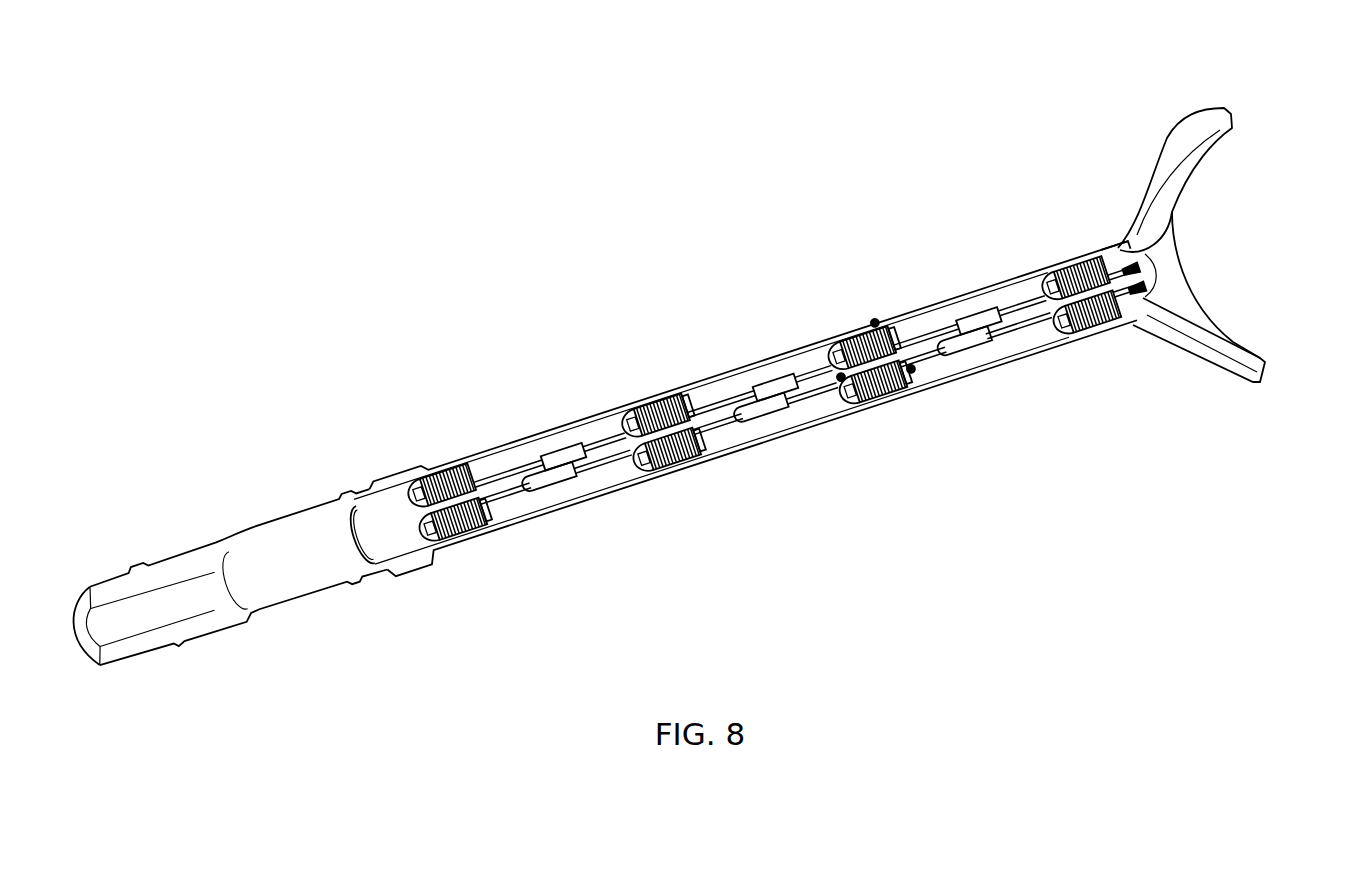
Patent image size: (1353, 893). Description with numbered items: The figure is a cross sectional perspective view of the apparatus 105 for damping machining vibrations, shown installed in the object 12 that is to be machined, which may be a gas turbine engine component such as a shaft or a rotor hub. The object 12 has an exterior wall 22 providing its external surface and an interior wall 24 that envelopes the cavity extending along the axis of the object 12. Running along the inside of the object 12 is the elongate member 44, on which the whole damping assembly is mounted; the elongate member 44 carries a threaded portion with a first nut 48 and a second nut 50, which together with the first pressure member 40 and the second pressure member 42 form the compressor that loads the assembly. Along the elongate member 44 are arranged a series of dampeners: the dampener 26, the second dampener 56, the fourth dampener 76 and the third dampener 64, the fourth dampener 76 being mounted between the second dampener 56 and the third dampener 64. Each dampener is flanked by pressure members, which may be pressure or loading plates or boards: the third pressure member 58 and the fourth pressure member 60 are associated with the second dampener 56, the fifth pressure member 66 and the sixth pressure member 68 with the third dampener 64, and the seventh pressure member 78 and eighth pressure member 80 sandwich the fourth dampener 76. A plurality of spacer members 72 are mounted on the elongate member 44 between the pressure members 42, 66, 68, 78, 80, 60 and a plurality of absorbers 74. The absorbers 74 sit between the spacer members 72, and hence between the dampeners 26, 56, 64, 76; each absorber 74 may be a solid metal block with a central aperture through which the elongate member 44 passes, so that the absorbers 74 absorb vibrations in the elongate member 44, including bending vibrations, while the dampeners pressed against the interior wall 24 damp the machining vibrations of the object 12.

The object 12 is at (1190, 112).
The apparatus 105 is at (1222, 246).
The exterior wall 22 is at (1037, 267).
The interior wall 24 is at (290, 550).
The dampener 26 is at (1092, 327).
The first pressure member 40 is at (1113, 250).
The second pressure member 42 is at (1060, 330).
The elongate member 44 is at (763, 400).
The first nut 48 is at (1130, 293).
The second nut 50 is at (407, 490).
The second dampener 56 is at (467, 533).
The third pressure member 58 is at (417, 525).
The fourth pressure member 60 is at (487, 510).
The third dampener 64 is at (890, 400).
The fifth pressure member 66 is at (913, 368).
The sixth pressure member 68 is at (847, 383).
The spacer members 72 is at (1023, 303).
The absorbers 74 is at (977, 313).
The fourth dampener 76 is at (663, 460).
The seventh pressure member 78 is at (700, 433).
The eighth pressure member 80 is at (643, 463).